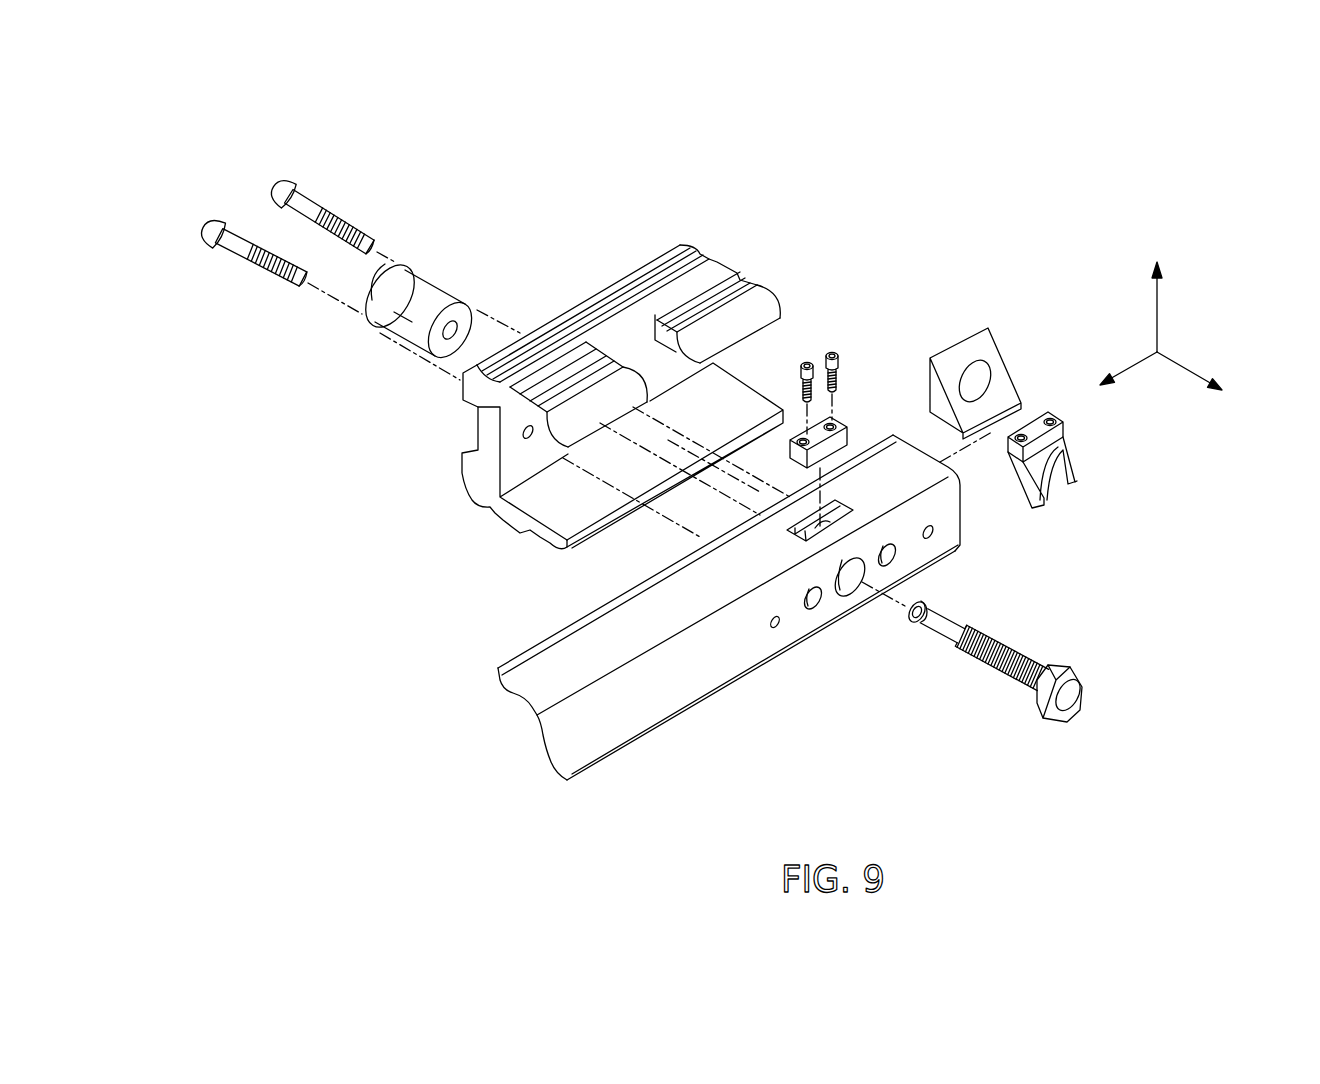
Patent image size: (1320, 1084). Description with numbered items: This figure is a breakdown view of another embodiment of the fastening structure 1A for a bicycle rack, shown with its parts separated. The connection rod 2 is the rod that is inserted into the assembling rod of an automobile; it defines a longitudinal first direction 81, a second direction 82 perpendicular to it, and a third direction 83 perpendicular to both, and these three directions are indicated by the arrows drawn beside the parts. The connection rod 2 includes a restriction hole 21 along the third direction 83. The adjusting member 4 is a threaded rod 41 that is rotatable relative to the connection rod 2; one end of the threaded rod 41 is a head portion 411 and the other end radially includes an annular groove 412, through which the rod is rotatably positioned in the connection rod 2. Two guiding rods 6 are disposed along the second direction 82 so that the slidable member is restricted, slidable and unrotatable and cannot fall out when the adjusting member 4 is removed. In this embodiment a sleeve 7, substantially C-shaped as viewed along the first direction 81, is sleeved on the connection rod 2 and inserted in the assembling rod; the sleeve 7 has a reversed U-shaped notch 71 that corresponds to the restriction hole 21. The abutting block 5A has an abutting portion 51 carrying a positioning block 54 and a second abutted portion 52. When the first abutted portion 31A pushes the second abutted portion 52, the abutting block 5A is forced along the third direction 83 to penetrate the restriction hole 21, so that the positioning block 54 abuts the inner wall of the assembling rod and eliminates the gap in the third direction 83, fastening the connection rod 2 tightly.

The fastening structure 1A is at (858, 290).
The connection rod 2 is at (680, 693).
The restriction hole 21 is at (806, 513).
The first abutted portion 31A is at (990, 350).
The adjusting member 4 is at (960, 655).
The threaded rod 41 is at (1000, 672).
The head portion 411 is at (1073, 706).
The annular groove 412 is at (915, 620).
The abutting block 5A is at (1064, 500).
The abutting portion 51 is at (1064, 432).
The second abutted portion 52 is at (1025, 472).
The positioning block 54 is at (845, 432).
The guiding rod 6 is at (283, 180).
The sleeve 7 is at (668, 290).
The reversed U-shaped notch 71 is at (650, 368).
The first direction 81 is at (1138, 362).
The second direction 82 is at (1185, 369).
The third direction 83 is at (1160, 317).